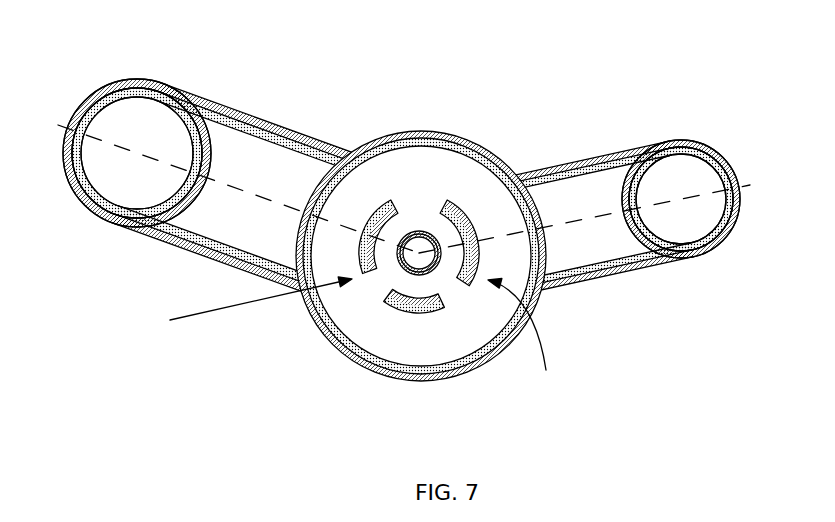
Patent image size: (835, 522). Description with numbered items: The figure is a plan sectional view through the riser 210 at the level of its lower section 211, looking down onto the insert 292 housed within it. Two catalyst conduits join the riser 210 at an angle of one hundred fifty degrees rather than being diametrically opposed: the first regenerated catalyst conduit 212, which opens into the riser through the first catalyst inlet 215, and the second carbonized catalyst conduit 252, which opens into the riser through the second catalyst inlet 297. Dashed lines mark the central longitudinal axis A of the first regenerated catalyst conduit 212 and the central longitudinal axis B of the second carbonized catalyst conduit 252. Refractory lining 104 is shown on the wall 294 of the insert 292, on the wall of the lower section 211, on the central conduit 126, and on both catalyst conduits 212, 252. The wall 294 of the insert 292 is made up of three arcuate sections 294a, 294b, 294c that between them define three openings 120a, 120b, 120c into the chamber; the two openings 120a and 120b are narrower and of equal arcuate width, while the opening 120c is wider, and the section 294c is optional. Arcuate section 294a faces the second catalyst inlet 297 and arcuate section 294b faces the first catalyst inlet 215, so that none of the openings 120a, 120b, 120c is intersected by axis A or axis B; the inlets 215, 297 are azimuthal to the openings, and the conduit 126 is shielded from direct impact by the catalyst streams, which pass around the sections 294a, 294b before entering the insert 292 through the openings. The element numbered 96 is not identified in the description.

The riser 210 is at (197, 428).
The lower section of the riser 211 is at (477, 142).
The first regenerated catalyst conduit 212 is at (197, 93).
The first catalyst inlet 215 is at (323, 222).
The second carbonized catalyst conduit 252 is at (620, 270).
The insert 292 is at (533, 340).
The wall of the insert 294 is at (237, 306).
The arcuate section 294a is at (480, 258).
The arcuate section 294b is at (360, 263).
The arcuate section 294c is at (424, 305).
The second catalyst inlet 297 is at (530, 225).
The annular body 96 is at (493, 212).
The refractory lining 104 is at (222, 118).
The opening 120a is at (457, 297).
The opening 120b is at (372, 299).
The opening 120c is at (427, 202).
The conduit 126 is at (417, 229).
The central longitudinal axis A is at (705, 190).
The central longitudinal axis B is at (108, 142).